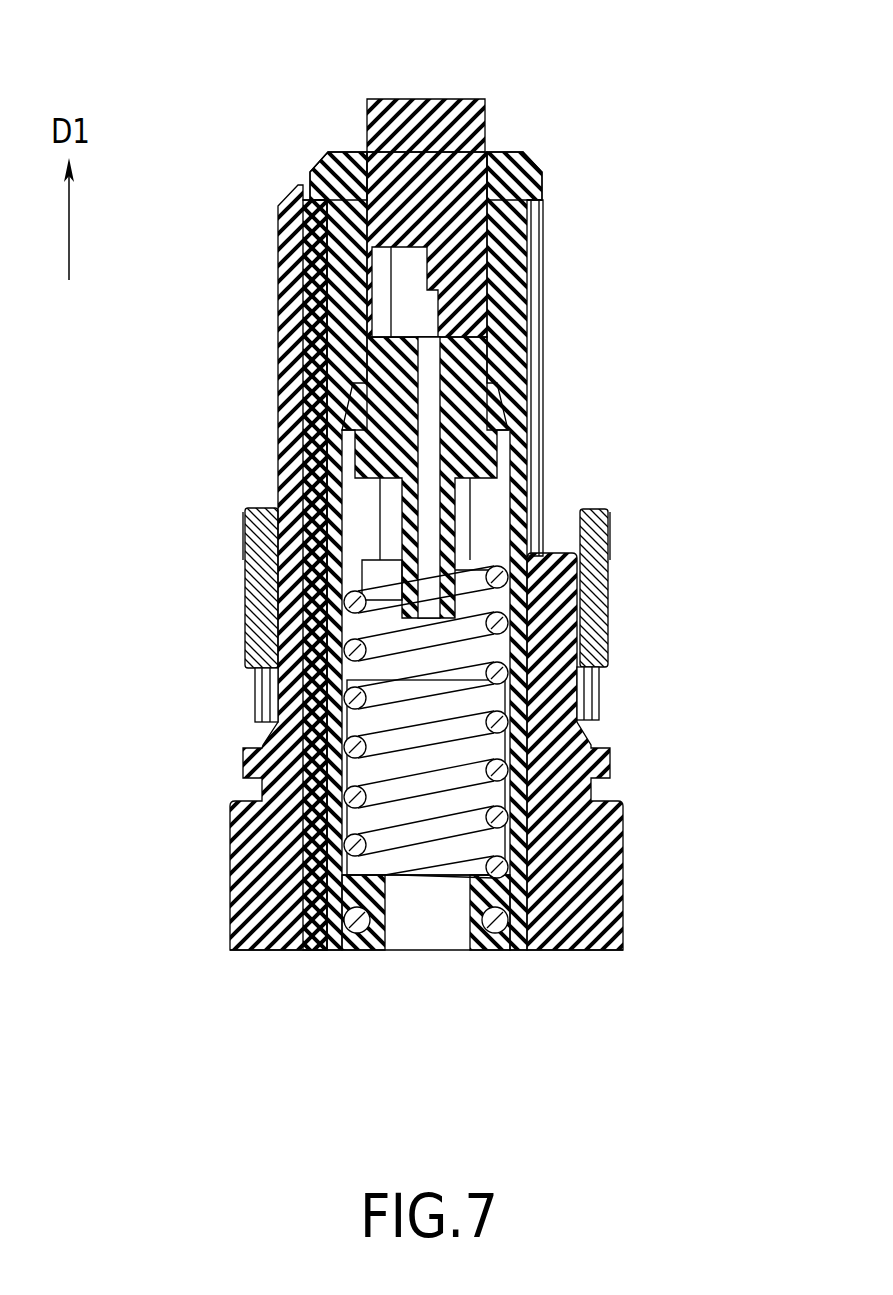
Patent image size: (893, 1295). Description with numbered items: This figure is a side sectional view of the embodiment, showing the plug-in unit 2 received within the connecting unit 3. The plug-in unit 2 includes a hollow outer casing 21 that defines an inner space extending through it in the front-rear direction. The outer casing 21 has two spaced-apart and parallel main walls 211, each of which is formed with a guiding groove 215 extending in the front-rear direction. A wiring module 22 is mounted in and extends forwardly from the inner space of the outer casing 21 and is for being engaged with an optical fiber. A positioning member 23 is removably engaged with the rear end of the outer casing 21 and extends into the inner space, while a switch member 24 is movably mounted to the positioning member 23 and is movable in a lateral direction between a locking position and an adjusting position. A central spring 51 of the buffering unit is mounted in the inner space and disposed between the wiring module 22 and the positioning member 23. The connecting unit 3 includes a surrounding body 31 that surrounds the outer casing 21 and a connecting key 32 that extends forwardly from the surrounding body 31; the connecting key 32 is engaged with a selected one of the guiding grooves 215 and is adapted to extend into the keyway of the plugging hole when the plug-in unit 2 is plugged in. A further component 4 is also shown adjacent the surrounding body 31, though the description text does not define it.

The plug-in unit 2 is at (451, 480).
The hollow outer casing 21 is at (446, 551).
The main wall 211 is at (340, 170).
The guiding groove 215 is at (320, 256).
The wiring module 22 is at (460, 108).
The positioning member 23 is at (373, 943).
The switch member 24 is at (493, 945).
The connecting unit 3 is at (363, 577).
The surrounding body 31 is at (245, 838).
The connecting key 32 is at (282, 372).
The collar 4 is at (617, 527).
The central spring 51 is at (507, 680).